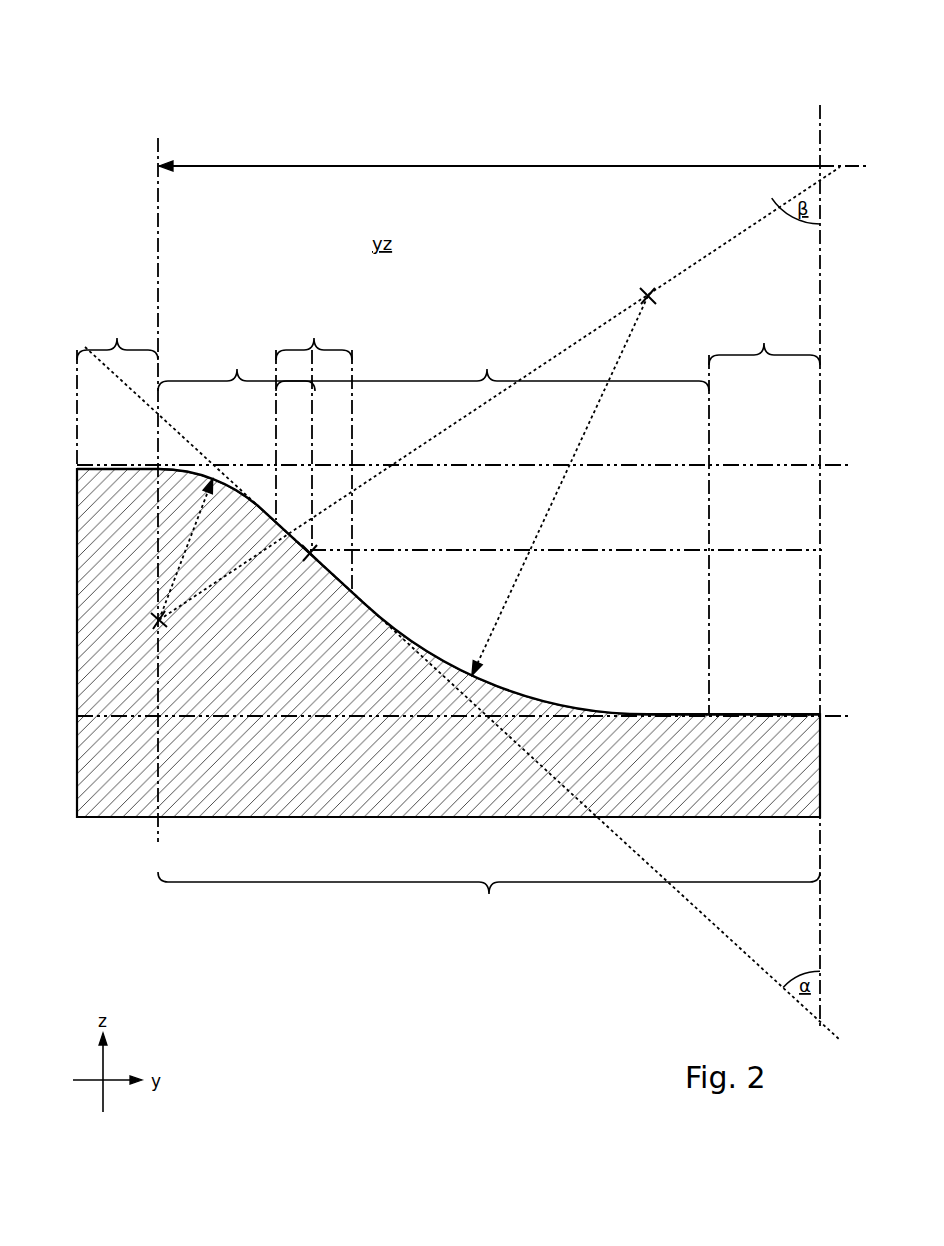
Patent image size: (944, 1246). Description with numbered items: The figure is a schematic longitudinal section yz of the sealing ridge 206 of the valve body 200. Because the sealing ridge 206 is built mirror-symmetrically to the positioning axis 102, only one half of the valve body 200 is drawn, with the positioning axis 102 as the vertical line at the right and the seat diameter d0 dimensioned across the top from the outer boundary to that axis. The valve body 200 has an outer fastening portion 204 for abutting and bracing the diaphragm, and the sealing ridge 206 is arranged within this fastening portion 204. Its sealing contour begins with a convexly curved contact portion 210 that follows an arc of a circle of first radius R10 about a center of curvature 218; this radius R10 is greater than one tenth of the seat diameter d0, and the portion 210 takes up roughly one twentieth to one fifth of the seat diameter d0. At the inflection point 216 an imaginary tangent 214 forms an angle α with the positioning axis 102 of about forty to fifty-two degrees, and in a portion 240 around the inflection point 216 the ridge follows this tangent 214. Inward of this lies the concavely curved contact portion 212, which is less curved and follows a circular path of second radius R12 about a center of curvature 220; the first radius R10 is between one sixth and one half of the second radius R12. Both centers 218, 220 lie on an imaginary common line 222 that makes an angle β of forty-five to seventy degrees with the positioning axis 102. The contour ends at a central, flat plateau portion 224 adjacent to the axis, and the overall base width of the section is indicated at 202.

The valve body 200 is at (127, 120).
The body / base width 202 is at (448, 703).
The fastening portion 204 is at (117, 325).
The sealing ridge 206 is at (373, 606).
The convexly curved contact portion 210 is at (236, 365).
The concavely curved contact portion 212 is at (492, 365).
The imaginary tangent 214 is at (735, 940).
The inflection point 216 is at (304, 560).
The center of curvature 218 is at (155, 630).
The center of curvature 220 is at (640, 287).
The imaginary common line 222 is at (585, 337).
The plateau portion 224 is at (764, 338).
The portion around the inflection point 240 is at (314, 334).
The positioning axis 102 is at (812, 667).
The seat diameter d0 is at (440, 165).
The first radius R10 is at (182, 552).
The second radius R12 is at (576, 450).